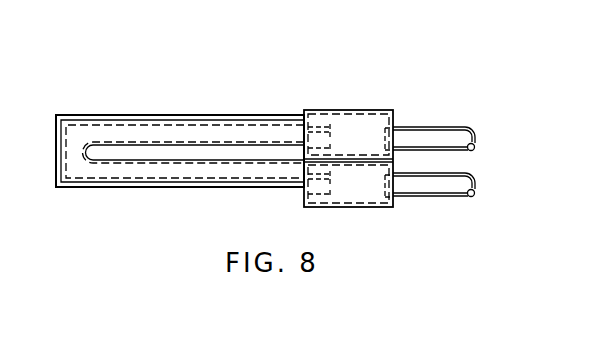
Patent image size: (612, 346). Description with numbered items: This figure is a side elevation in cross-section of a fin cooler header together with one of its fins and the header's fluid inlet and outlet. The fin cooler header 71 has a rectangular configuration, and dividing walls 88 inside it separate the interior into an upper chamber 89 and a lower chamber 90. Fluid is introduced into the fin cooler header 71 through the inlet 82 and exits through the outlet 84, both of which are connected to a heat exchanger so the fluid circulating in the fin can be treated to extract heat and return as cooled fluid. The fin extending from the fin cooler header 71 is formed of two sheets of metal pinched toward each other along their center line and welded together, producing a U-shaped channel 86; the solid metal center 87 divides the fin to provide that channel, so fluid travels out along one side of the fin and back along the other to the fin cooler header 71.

The fin cooler header 71 is at (357, 112).
The inlet 82 is at (432, 198).
The outlet 84 is at (476, 152).
The U-shaped channel 86 is at (80, 168).
The solid metal center 87 is at (212, 162).
The dividing walls 88 is at (368, 157).
The upper chamber 89 is at (357, 127).
The lower chamber 90 is at (350, 187).